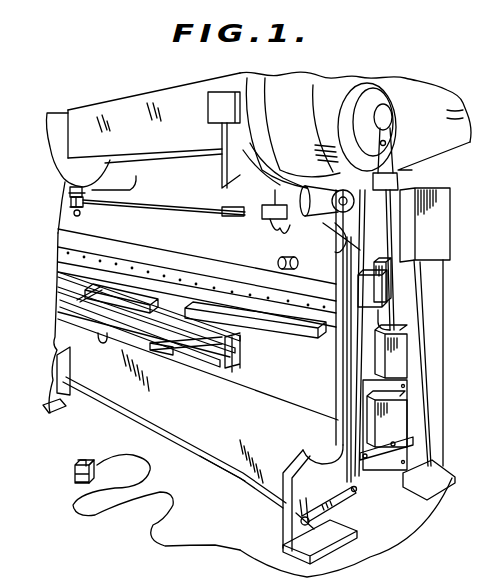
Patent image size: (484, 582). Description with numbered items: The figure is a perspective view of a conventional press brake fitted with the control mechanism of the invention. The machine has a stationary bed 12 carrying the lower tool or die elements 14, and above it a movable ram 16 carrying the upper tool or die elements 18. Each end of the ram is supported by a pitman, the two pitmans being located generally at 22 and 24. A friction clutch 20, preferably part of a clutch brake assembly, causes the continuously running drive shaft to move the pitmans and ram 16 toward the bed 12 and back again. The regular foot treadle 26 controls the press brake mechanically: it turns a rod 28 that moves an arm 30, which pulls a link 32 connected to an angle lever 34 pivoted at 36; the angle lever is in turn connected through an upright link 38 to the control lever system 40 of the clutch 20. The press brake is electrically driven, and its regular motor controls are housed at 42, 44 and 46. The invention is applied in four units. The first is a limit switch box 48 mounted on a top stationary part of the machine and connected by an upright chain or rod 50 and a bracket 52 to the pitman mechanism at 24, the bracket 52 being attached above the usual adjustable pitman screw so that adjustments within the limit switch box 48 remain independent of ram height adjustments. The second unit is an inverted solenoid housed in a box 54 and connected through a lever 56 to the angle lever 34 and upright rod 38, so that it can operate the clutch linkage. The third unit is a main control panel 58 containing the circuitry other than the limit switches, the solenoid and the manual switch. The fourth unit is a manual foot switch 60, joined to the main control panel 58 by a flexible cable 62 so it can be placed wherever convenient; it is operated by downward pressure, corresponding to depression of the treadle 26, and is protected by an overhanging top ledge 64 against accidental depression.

The stationary bed 12 is at (273, 397).
The lower tool or die elements 14 is at (65, 277).
The movable ram 16 is at (203, 199).
The upper tool or die elements 18 is at (110, 269).
The friction clutch 20 is at (399, 102).
The pitman 22 is at (90, 192).
The pitman mechanism 24 is at (272, 228).
The foot treadle 26 is at (53, 413).
The rod 28 is at (220, 478).
The arm 30 is at (287, 520).
The link 32 is at (325, 503).
The angle lever 34 is at (369, 475).
The pivot 36 is at (313, 441).
The upright link 38 is at (333, 378).
The control lever system 40 is at (392, 164).
The motor control housing 42 is at (410, 281).
The motor control housing 44 is at (379, 294).
The motor control housing 46 is at (402, 354).
The limit switch box 48 is at (210, 108).
The upright chain or rod 50 is at (222, 136).
The bracket 52 is at (200, 213).
The solenoid box 54 is at (400, 423).
The lever 56 is at (405, 451).
The main control panel 58 is at (438, 217).
The manual foot switch 60 is at (73, 481).
The flexible cable 62 is at (197, 545).
The overhanging top ledge 64 is at (80, 461).